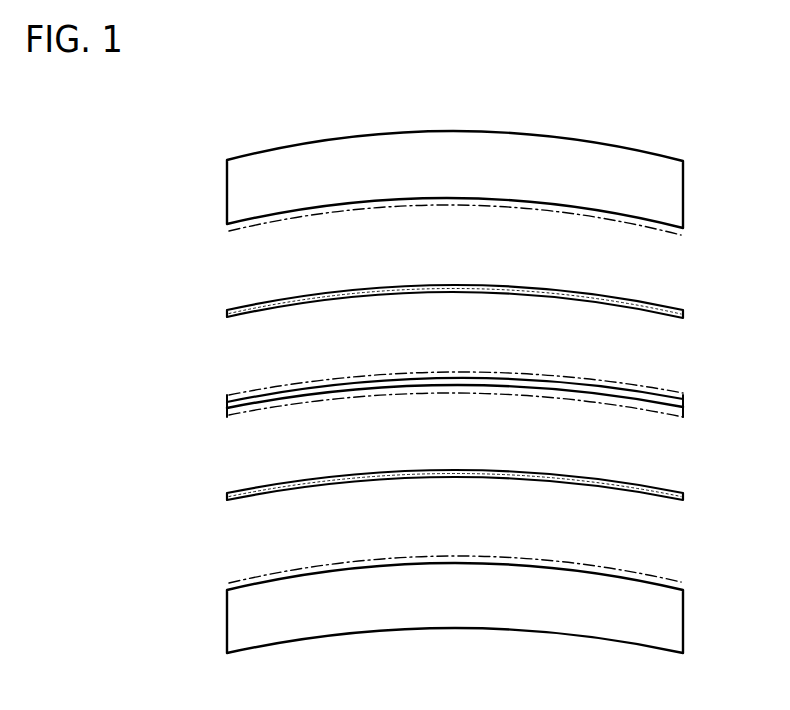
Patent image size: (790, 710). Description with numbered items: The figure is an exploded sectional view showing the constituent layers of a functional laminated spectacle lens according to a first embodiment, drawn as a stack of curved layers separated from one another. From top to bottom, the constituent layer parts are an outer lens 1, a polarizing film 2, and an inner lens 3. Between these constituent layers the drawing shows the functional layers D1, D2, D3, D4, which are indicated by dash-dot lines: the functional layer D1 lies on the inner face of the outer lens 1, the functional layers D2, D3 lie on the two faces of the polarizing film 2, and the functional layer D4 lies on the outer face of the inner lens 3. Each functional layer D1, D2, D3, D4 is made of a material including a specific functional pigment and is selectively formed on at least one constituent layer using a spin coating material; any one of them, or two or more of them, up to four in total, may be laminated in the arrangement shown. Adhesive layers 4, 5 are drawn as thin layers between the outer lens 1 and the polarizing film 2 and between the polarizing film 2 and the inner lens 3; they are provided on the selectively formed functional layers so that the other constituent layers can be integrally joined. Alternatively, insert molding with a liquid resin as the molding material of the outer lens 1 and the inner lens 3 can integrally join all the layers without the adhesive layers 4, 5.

The outer lens 1 is at (655, 182).
The polarizing film 2 is at (665, 403).
The inner lens 3 is at (648, 617).
The adhesive layer 4 is at (660, 310).
The adhesive layer 5 is at (660, 485).
The functional layer D1 is at (628, 220).
The functional layer D2 is at (630, 387).
The functional layer D3 is at (607, 400).
The functional layer D4 is at (607, 568).